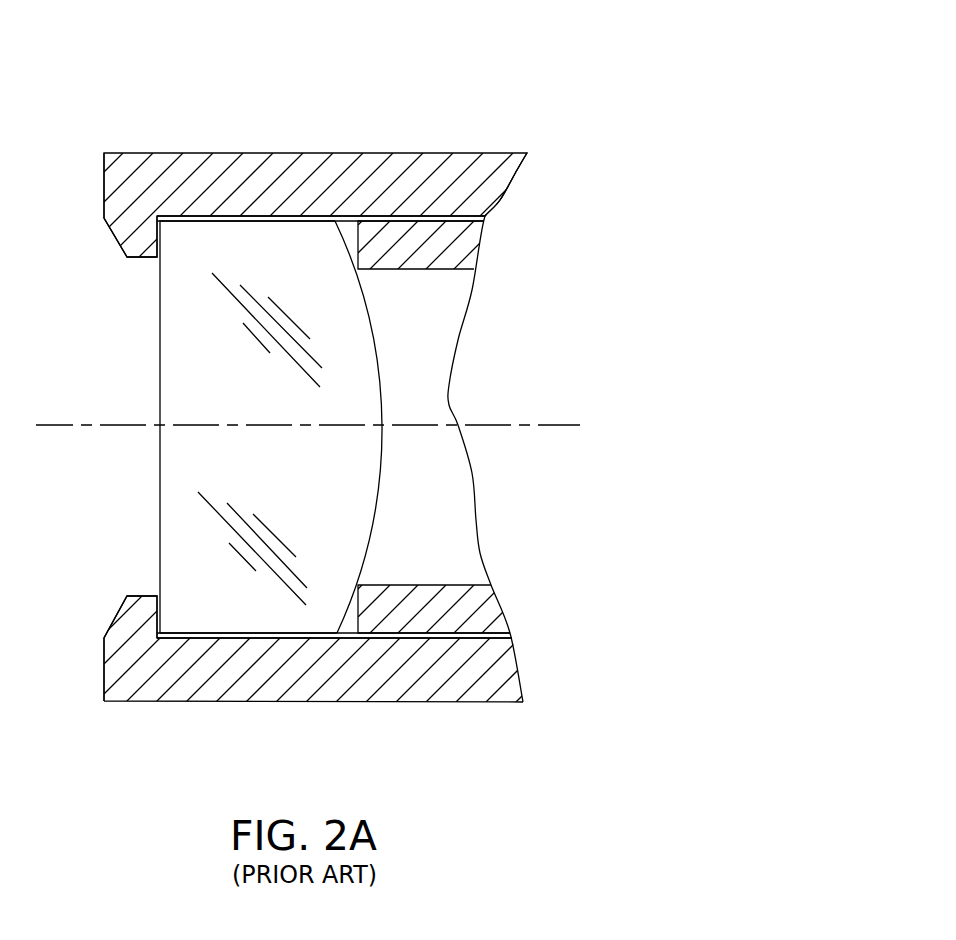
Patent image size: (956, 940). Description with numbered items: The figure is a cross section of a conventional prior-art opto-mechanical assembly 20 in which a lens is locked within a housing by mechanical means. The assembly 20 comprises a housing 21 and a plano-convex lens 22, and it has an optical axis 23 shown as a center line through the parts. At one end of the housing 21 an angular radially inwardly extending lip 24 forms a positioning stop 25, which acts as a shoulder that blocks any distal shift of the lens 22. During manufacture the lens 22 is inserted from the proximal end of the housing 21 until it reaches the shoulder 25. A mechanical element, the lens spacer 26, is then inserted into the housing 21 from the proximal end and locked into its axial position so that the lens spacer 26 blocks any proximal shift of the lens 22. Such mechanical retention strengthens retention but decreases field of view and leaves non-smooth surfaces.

The opto-mechanical assembly 20 is at (543, 100).
The housing 21 is at (450, 175).
The plano-convex lens 22 is at (208, 383).
The optical axis 23 is at (528, 425).
The angular radially inwardly extending lip 24 is at (115, 237).
The positioning stop 25 is at (158, 237).
The lens spacer 26 is at (452, 242).